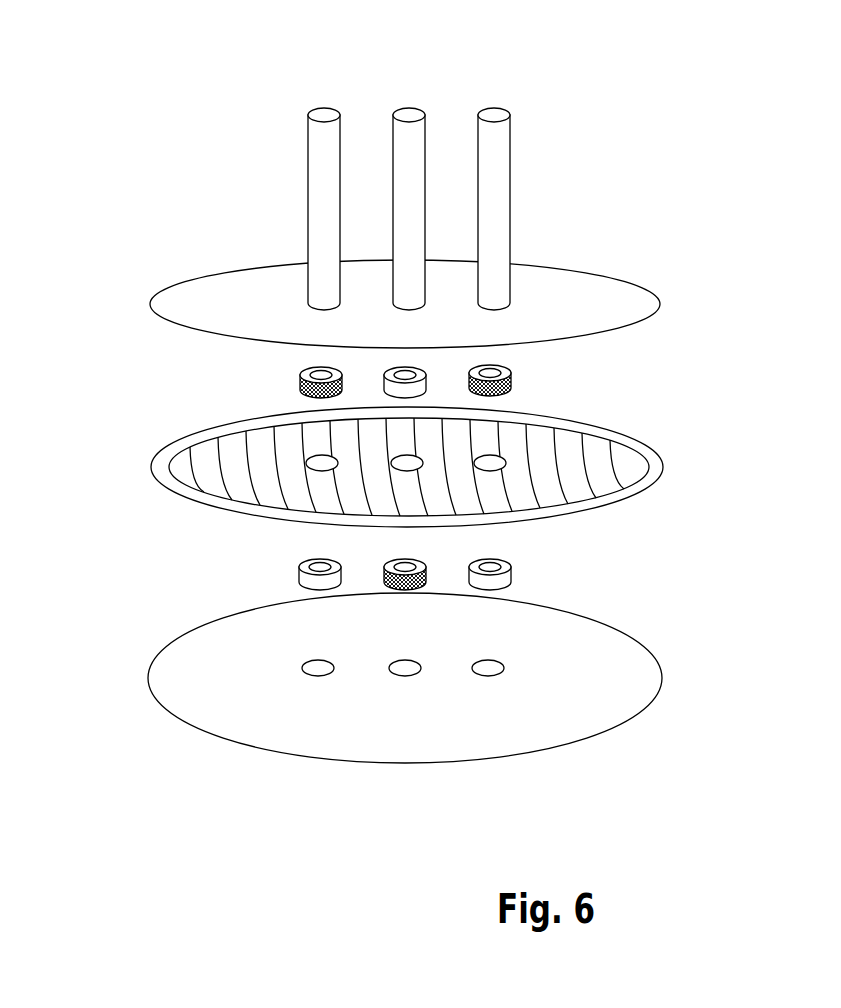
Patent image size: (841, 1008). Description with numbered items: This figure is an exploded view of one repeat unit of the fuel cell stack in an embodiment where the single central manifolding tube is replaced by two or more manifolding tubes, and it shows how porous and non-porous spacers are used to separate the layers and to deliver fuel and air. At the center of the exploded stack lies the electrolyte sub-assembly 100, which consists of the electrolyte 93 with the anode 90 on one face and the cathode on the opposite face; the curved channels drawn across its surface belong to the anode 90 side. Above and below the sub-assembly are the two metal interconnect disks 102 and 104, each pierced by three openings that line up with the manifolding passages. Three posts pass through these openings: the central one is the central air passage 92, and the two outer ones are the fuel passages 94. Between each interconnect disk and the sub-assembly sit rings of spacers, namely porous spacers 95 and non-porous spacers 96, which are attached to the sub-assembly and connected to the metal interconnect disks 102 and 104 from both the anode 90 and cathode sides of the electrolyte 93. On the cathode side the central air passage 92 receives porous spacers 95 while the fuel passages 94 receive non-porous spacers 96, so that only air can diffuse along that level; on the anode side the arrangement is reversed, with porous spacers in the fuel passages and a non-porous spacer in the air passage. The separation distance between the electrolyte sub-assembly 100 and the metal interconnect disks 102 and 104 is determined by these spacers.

The anode 90 is at (240, 460).
The central air passage 92 is at (423, 303).
The electrolyte 93 is at (245, 513).
The fuel passages 94 is at (302, 292).
The porous spacers 95 is at (285, 378).
The non-porous spacers 96 is at (436, 382).
The electrolyte sub-assembly 100 is at (435, 474).
The metal interconnect disk 102 is at (664, 298).
The metal interconnect disk 104 is at (664, 680).